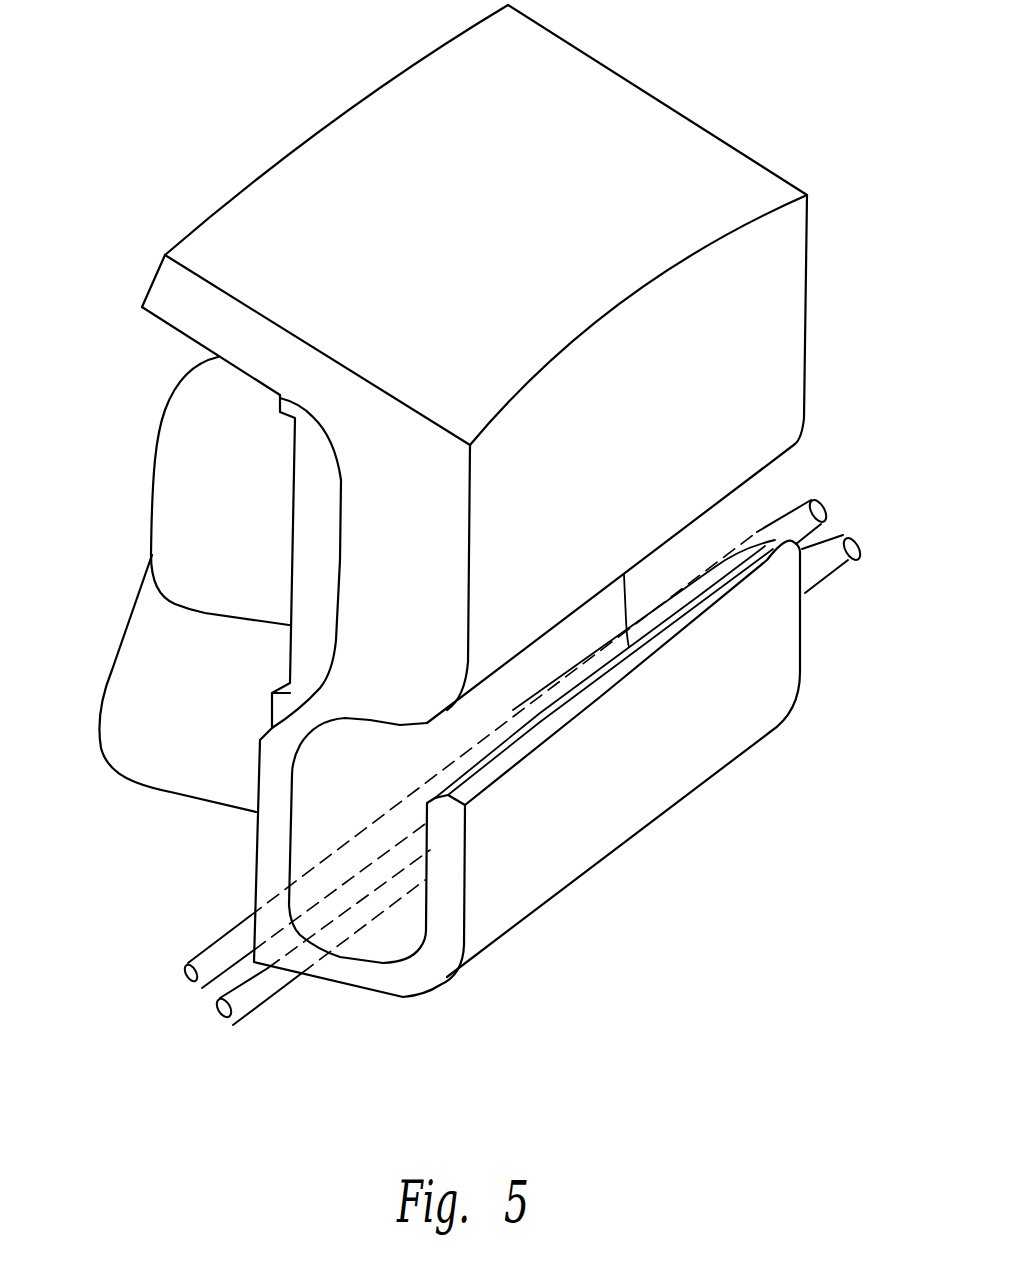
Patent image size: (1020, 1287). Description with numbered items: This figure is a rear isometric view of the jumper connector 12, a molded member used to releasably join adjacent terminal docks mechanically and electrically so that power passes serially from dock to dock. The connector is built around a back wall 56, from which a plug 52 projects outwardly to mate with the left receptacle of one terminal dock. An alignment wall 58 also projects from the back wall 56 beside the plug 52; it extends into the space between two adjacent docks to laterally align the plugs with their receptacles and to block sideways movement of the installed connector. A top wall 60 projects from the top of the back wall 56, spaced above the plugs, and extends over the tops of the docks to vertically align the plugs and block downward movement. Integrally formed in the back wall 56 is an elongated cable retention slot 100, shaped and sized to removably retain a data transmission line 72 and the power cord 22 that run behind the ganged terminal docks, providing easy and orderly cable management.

The jumper connector 12 is at (838, 239).
The top wall 60 is at (347, 128).
The back wall 56 is at (788, 325).
The plug 52 is at (158, 503).
The alignment wall 58 is at (125, 665).
The cable retention slot 100 is at (745, 517).
The data transmission line 72 is at (215, 935).
The power cord 22 is at (830, 572).